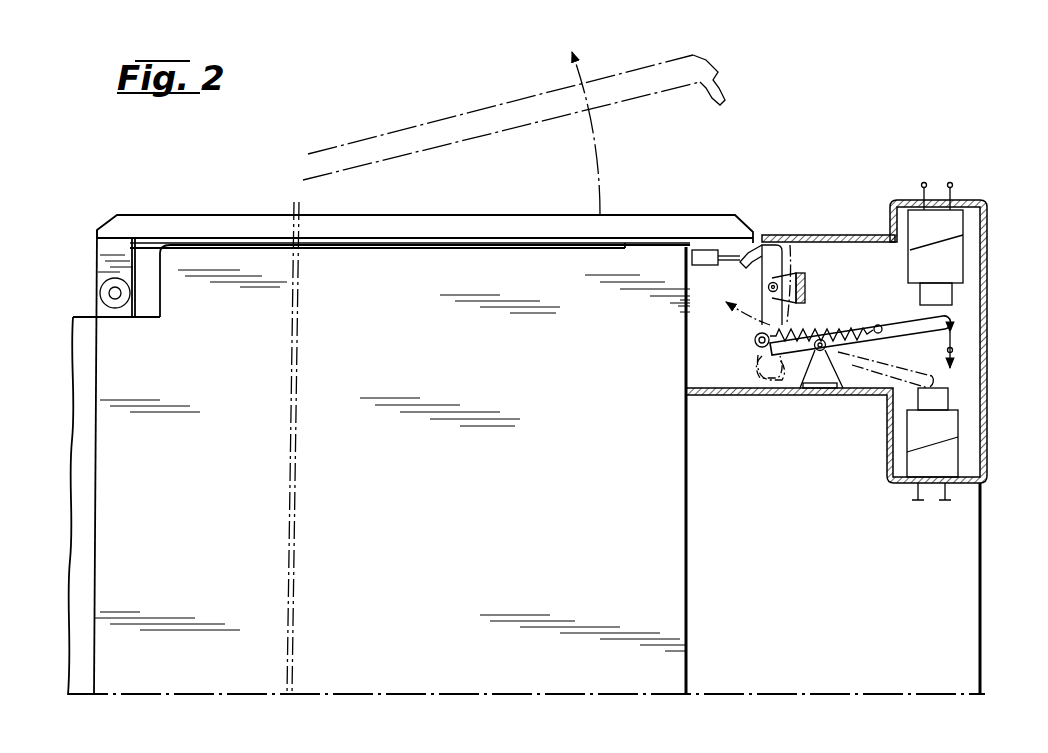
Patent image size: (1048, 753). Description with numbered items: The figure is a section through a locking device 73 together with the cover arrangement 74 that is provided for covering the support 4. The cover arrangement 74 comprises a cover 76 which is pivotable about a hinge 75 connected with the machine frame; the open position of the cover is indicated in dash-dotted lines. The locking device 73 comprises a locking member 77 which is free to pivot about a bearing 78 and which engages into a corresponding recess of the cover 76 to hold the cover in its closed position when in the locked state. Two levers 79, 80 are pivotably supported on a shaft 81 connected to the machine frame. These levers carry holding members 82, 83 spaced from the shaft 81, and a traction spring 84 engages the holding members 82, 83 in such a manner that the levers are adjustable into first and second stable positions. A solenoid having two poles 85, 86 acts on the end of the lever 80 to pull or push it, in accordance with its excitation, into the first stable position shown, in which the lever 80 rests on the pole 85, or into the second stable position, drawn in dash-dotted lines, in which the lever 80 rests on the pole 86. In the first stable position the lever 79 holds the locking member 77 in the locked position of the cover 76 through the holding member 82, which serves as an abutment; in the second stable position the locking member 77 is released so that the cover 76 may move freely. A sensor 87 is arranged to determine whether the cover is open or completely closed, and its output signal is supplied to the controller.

The support 4 is at (354, 236).
The locking device 73 is at (857, 319).
The cover arrangement 74 is at (644, 193).
The hinge 75 is at (100, 293).
The cover 76 is at (480, 227).
The locking member 77 is at (777, 258).
The bearing 78 is at (768, 287).
The lever 79 is at (765, 368).
The lever 80 is at (947, 318).
The shaft 81 is at (820, 352).
The holding member 82 is at (755, 340).
The holding member 83 is at (878, 324).
The traction spring 84 is at (848, 327).
The pole 85 is at (943, 293).
The pole 86 is at (942, 400).
The sensor 87 is at (703, 252).